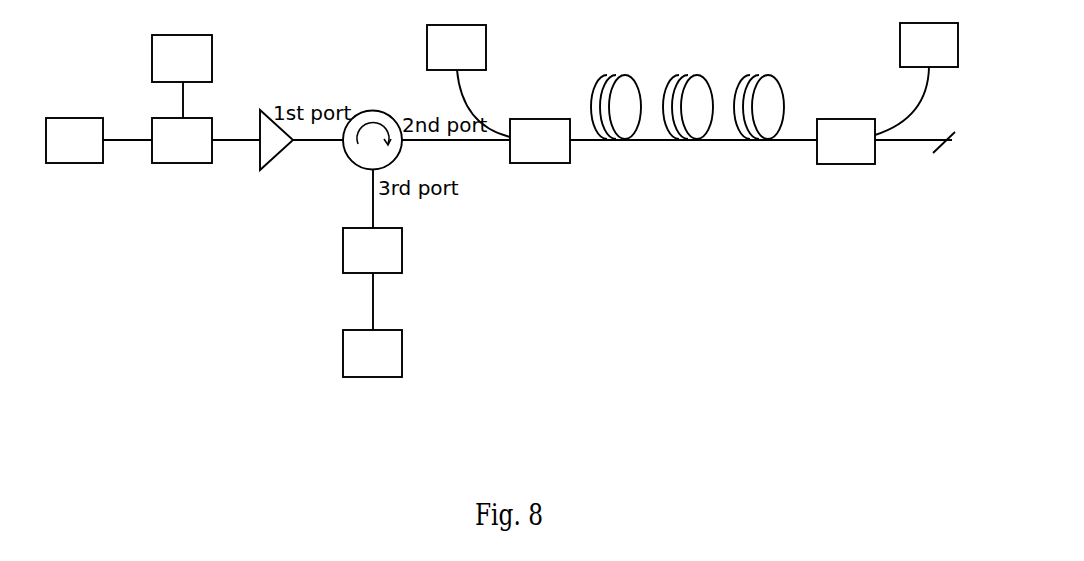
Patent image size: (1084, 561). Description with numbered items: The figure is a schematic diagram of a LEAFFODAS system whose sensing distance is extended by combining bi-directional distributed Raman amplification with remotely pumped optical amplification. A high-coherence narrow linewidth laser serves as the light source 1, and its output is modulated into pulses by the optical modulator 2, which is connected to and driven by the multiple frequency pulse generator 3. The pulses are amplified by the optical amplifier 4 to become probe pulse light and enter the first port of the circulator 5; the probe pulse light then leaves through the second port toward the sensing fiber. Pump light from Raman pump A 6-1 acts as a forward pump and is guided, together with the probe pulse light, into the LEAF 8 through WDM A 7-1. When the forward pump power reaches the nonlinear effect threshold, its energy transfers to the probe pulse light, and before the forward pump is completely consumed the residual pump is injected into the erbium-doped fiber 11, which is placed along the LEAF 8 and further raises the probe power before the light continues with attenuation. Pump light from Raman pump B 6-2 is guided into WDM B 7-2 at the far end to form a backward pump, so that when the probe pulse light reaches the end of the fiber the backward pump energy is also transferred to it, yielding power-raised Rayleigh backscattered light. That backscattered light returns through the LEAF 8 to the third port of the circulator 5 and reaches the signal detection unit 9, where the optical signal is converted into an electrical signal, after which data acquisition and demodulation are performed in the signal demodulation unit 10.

The light source 1 is at (74, 140).
The optical modulator 2 is at (182, 140).
The multiple frequency pulse generator 3 is at (182, 58).
The optical amplifier 4 is at (276, 140).
The circulator 5 is at (372, 140).
The Raman pump A 6-1 is at (468, 81).
The Raman pump B 6-2 is at (916, 79).
The WDM A 7-1 is at (540, 141).
The WDM B 7-2 is at (846, 141).
The LEAF 8 is at (687, 107).
The signal detection unit 9 is at (372, 250).
The signal demodulation unit 10 is at (372, 353).
The erbium-doped fiber (EDF) 11 is at (688, 107).